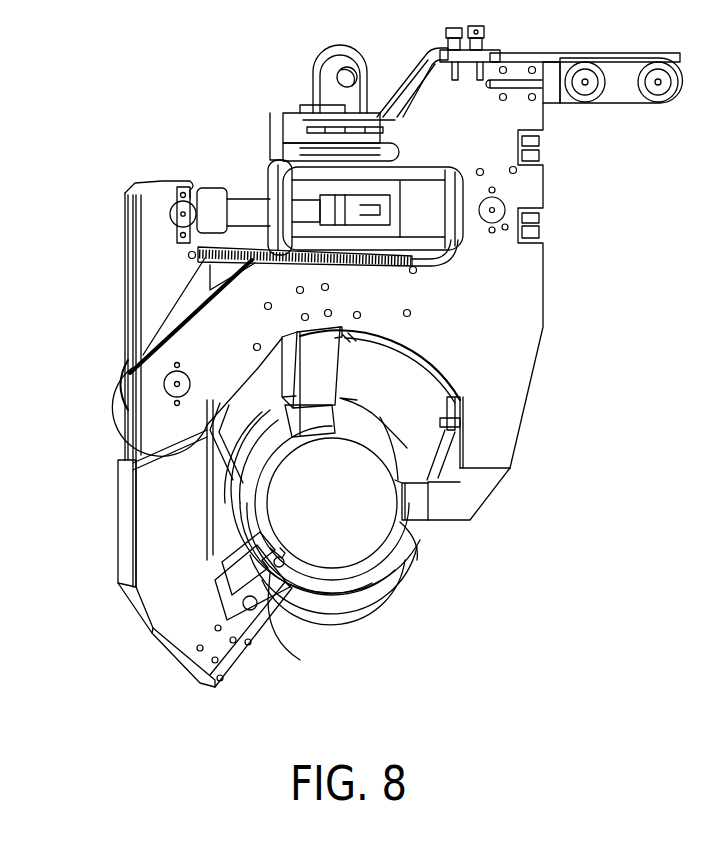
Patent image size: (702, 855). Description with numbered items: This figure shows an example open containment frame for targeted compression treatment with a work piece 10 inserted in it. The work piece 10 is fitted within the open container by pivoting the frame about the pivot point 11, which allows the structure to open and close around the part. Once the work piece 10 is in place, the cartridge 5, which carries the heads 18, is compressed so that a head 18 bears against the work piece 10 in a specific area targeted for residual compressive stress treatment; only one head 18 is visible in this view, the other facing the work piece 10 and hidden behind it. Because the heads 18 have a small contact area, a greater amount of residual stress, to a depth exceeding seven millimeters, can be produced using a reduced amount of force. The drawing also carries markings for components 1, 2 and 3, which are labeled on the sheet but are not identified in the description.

The sensor block 1 is at (252, 576).
The clamp jaw 2 is at (396, 423).
The clamp pad 3 is at (356, 462).
The cartridge 5 is at (263, 620).
The work piece 10 is at (352, 527).
The pivot point 11 is at (167, 390).
The head 18 is at (300, 575).